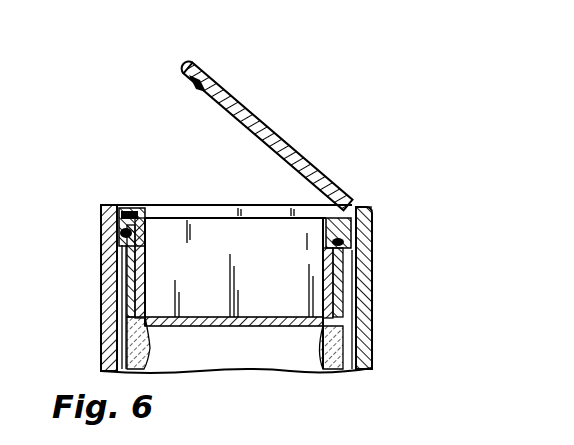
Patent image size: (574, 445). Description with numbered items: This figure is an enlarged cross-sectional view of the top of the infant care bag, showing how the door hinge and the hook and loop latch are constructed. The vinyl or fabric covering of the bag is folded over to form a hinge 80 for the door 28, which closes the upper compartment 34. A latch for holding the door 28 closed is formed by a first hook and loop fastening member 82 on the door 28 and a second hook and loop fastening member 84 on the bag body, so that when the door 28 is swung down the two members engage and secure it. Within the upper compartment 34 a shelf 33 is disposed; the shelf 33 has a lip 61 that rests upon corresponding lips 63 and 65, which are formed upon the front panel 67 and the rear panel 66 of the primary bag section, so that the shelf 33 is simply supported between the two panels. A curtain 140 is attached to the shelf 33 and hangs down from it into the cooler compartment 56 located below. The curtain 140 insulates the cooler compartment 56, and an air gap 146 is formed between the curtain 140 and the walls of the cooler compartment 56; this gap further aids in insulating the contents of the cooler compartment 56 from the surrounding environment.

The door 28 is at (256, 118).
The first hook and loop fastening member 82 is at (188, 82).
The hinge 80 is at (352, 211).
The second hook and loop fastening member 84 is at (126, 216).
The lip 61 is at (101, 216).
The upper compartment 34 is at (217, 233).
The shelf 33 is at (250, 213).
The lip 63 is at (141, 241).
The lip 65 is at (324, 247).
The front panel 67 is at (101, 300).
The rear panel 66 is at (372, 294).
The air gap 146 is at (372, 325).
The curtain 140 is at (147, 358).
The cooler compartment 56 is at (279, 372).